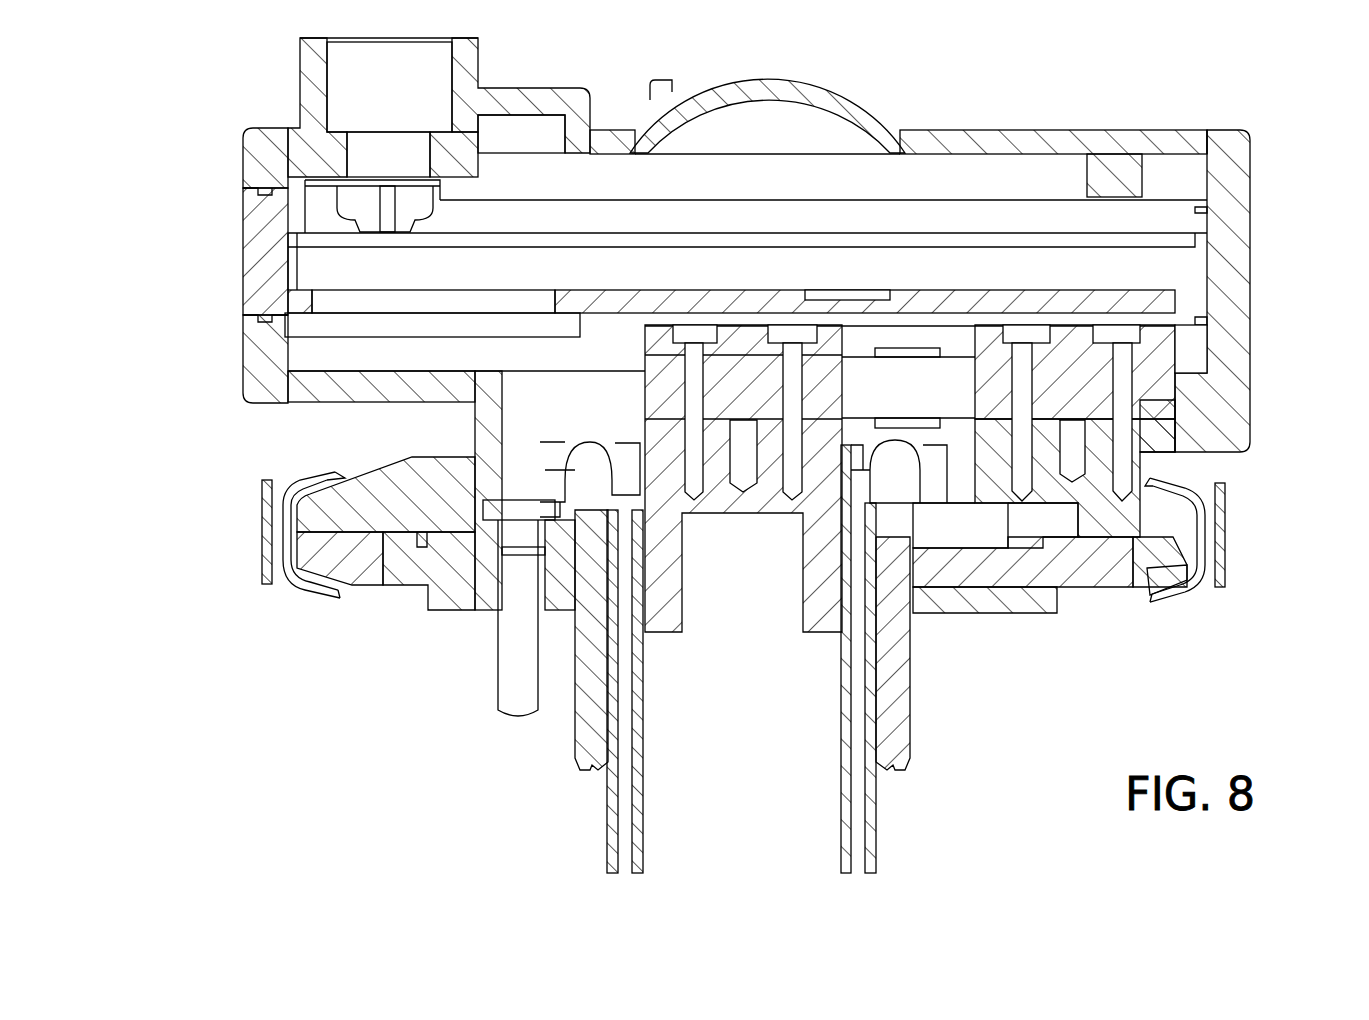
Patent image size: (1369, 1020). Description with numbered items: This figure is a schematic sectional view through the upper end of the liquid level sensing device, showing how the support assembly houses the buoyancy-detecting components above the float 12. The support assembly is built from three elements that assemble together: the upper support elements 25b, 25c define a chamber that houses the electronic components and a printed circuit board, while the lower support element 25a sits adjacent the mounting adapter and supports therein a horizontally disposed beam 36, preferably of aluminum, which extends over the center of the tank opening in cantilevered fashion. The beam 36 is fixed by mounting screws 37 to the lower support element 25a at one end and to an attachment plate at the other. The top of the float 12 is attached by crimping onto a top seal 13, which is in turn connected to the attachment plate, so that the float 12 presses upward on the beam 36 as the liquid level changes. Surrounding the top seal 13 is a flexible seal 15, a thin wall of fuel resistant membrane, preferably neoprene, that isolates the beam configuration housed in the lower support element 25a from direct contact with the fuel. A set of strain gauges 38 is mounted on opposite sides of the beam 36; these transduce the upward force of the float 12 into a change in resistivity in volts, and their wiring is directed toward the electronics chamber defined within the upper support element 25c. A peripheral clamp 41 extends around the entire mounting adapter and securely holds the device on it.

The lower support element 25a is at (243, 355).
The upper support element 25b is at (243, 265).
The upper support element 25c is at (243, 165).
The flexible seal 15 is at (595, 440).
The strain gauges 38 is at (930, 423).
The mounting screws 37 is at (1120, 336).
The beam 36 is at (1177, 395).
The peripheral clamp 41 is at (1235, 528).
The top seal 13 is at (662, 615).
The float 12 is at (850, 808).